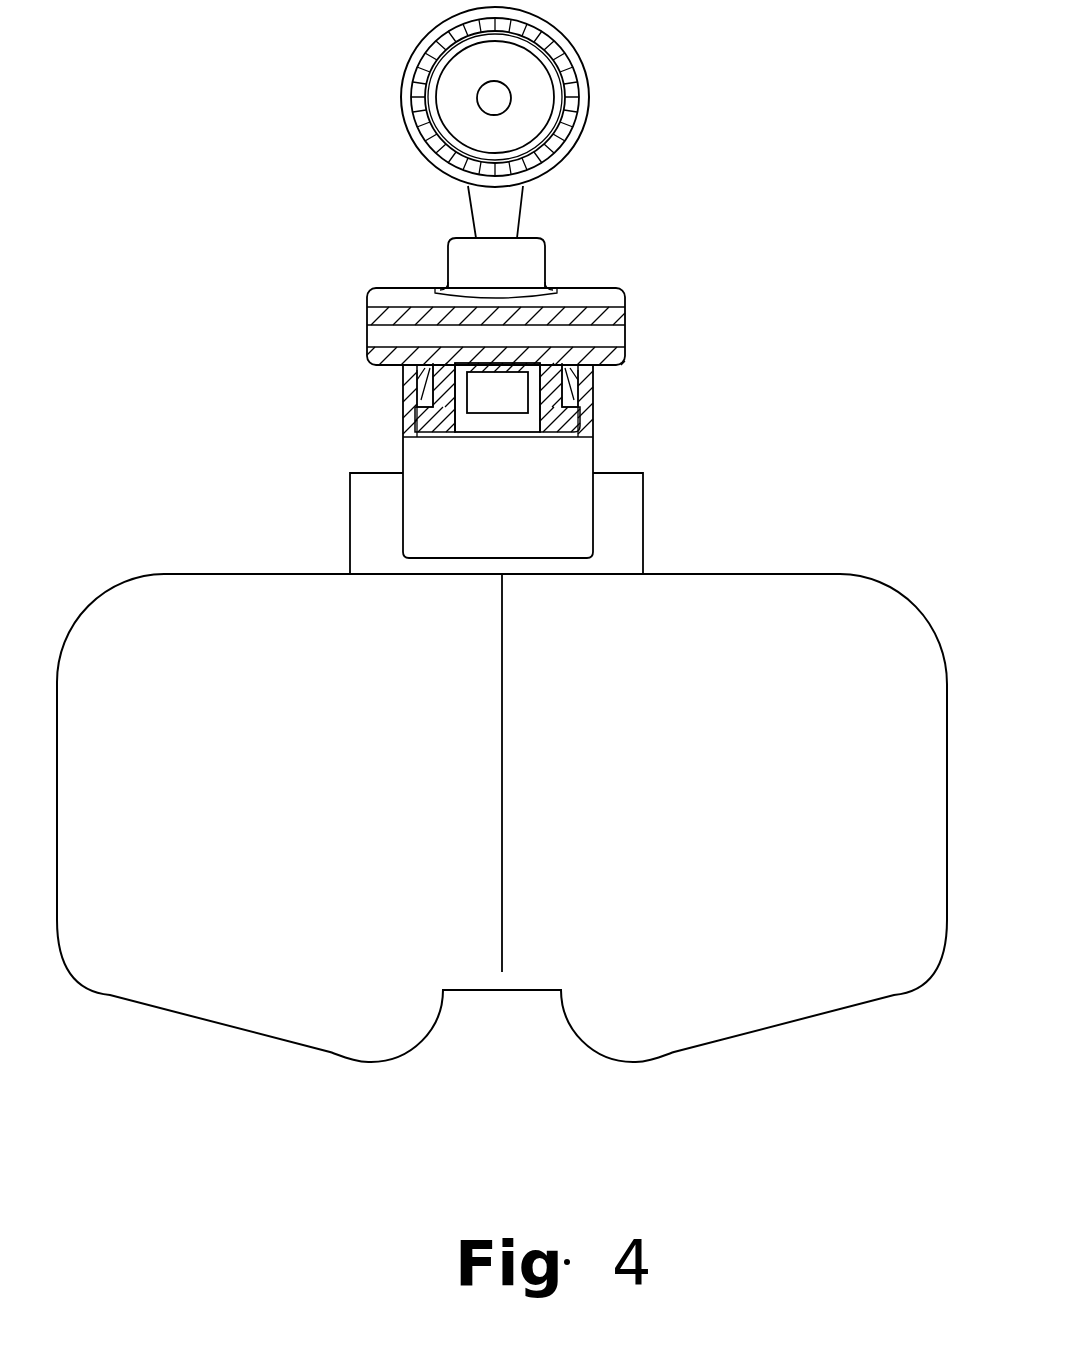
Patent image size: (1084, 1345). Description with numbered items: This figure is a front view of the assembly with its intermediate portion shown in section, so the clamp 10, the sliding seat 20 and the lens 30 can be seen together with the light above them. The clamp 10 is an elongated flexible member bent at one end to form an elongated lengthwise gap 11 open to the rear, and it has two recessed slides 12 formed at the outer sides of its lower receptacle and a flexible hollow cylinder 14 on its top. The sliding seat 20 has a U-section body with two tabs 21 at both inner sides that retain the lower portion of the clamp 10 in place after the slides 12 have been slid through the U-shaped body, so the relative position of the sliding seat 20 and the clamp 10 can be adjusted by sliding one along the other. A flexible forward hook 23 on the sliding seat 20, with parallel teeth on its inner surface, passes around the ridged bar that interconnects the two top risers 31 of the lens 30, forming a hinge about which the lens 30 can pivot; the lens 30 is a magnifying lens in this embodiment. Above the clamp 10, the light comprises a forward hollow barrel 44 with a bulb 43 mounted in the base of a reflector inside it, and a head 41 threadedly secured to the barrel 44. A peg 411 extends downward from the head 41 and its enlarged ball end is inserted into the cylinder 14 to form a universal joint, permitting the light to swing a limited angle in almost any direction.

The clamp 10 is at (432, 400).
The elongated lengthwise gap 11 is at (382, 332).
The recessed slides 12 is at (580, 368).
The flexible hollow cylinder 14 is at (468, 262).
The sliding seat 20 is at (410, 444).
The tabs 21 is at (583, 400).
The flexible forward hook 23 is at (457, 545).
The lens 30 is at (503, 990).
The top risers 31 is at (633, 526).
The head 41 is at (548, 30).
The peg 411 is at (510, 205).
The bulb 43 is at (492, 98).
The forward hollow barrel 44 is at (412, 94).